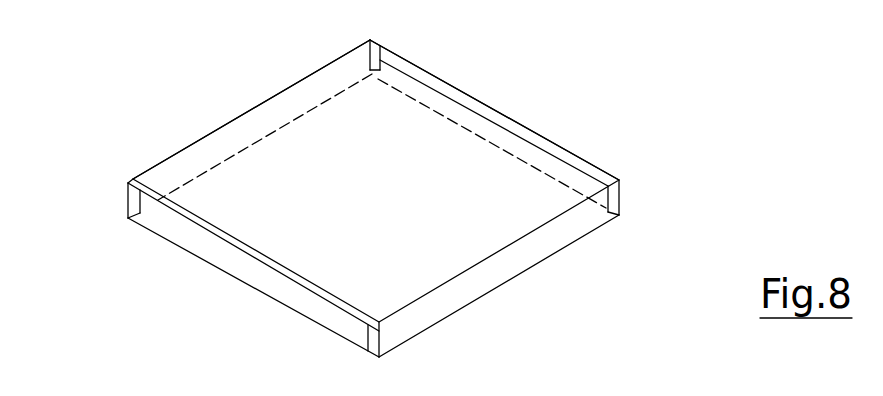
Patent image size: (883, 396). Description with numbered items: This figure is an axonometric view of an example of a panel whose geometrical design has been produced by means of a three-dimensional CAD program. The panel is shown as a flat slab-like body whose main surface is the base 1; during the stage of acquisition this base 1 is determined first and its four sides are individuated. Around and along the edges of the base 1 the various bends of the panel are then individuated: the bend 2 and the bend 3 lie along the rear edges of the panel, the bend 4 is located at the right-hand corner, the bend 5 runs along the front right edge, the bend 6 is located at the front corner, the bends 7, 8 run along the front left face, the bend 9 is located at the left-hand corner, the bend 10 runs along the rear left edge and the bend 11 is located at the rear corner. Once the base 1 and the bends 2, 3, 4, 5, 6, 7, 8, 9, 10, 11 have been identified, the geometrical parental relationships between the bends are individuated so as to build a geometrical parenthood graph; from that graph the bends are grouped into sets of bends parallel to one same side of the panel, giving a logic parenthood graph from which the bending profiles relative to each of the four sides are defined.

The base 1 is at (387, 176).
The bend 2 is at (541, 165).
The bend 3 is at (488, 104).
The bend 4 is at (622, 210).
The bend 5 is at (556, 253).
The bend 6 is at (365, 353).
The bend 7 is at (173, 243).
The bend 8 is at (227, 241).
The bend 9 is at (128, 212).
The bend 10 is at (210, 134).
The bend 11 is at (368, 69).